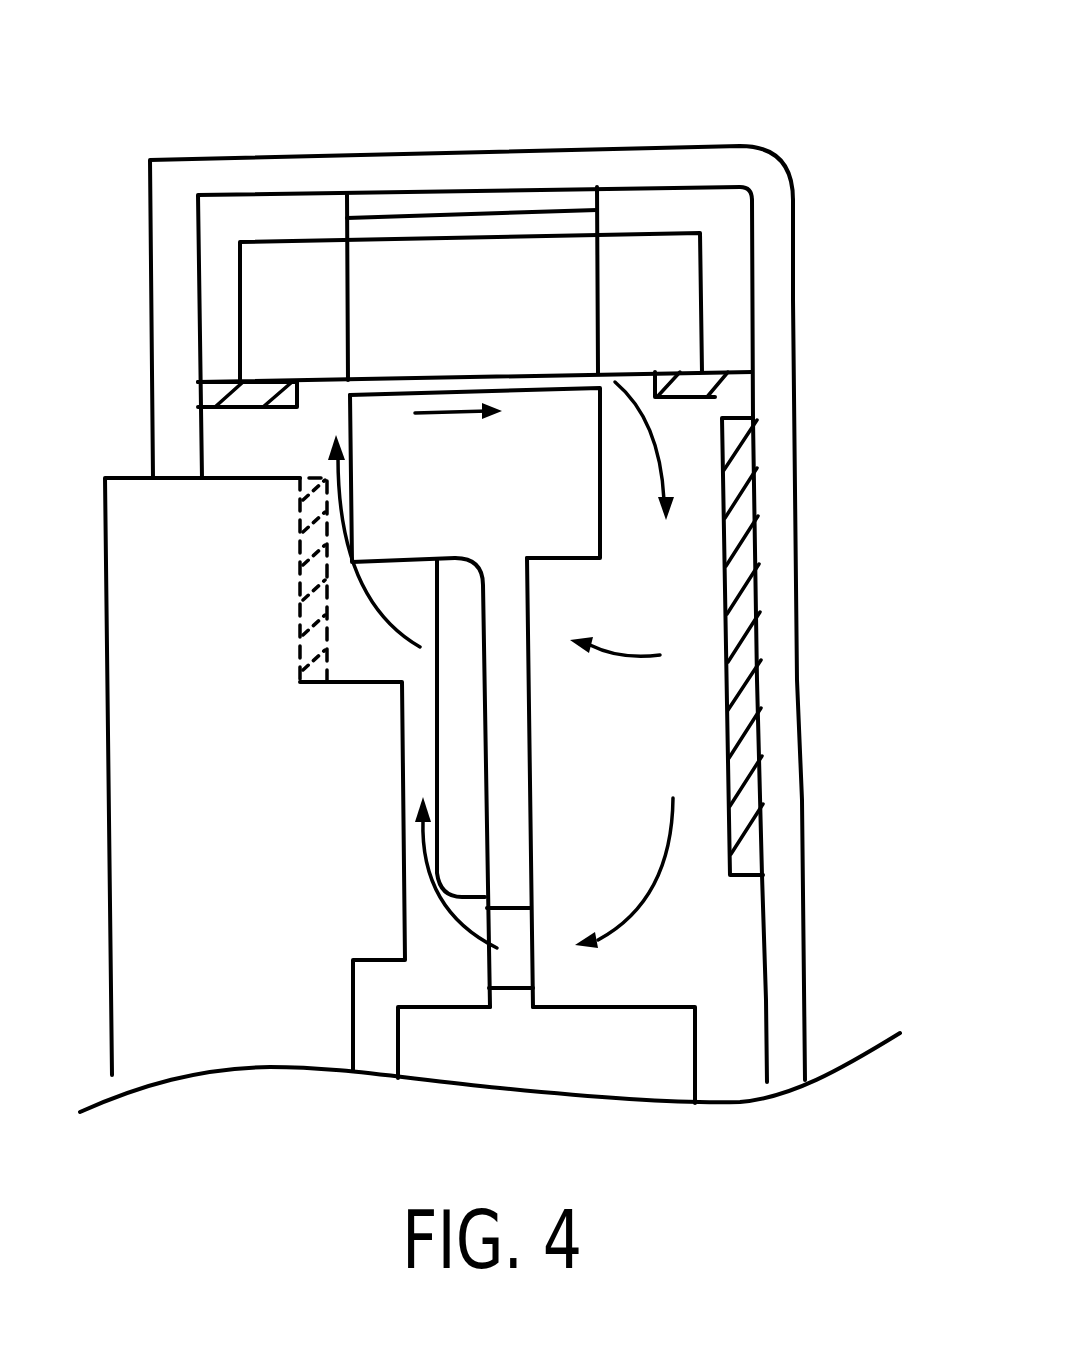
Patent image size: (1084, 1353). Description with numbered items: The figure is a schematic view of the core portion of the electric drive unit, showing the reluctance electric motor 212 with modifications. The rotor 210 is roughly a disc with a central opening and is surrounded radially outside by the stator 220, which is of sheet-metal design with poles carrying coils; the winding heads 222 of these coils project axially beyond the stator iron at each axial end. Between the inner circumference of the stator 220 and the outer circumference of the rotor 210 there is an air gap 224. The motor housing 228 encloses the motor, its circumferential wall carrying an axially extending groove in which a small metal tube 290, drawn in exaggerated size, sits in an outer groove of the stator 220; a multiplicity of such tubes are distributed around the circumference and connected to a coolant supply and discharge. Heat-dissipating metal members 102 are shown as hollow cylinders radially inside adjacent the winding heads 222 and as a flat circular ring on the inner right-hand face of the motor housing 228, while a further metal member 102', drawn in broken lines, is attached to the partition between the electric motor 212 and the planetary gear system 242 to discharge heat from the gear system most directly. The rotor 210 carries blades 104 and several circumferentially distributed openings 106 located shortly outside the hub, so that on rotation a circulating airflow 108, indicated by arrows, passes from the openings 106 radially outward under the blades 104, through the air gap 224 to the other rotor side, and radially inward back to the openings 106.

The heat-dissipating metal member 102 is at (478, 623).
The heat-dissipating metal member 102' is at (259, 580).
The blades 104 is at (532, 782).
The openings 106 is at (563, 956).
The circulating airflow 108 is at (726, 895).
The rotor 210 is at (741, 651).
The electric motor 212 is at (471, 242).
The stator 220 is at (463, 232).
The winding heads 222 is at (537, 233).
The air gap 224 is at (475, 642).
The motor housing 228 is at (821, 641).
The planetary gear system 242 is at (400, 790).
The metal tube 290 is at (472, 153).